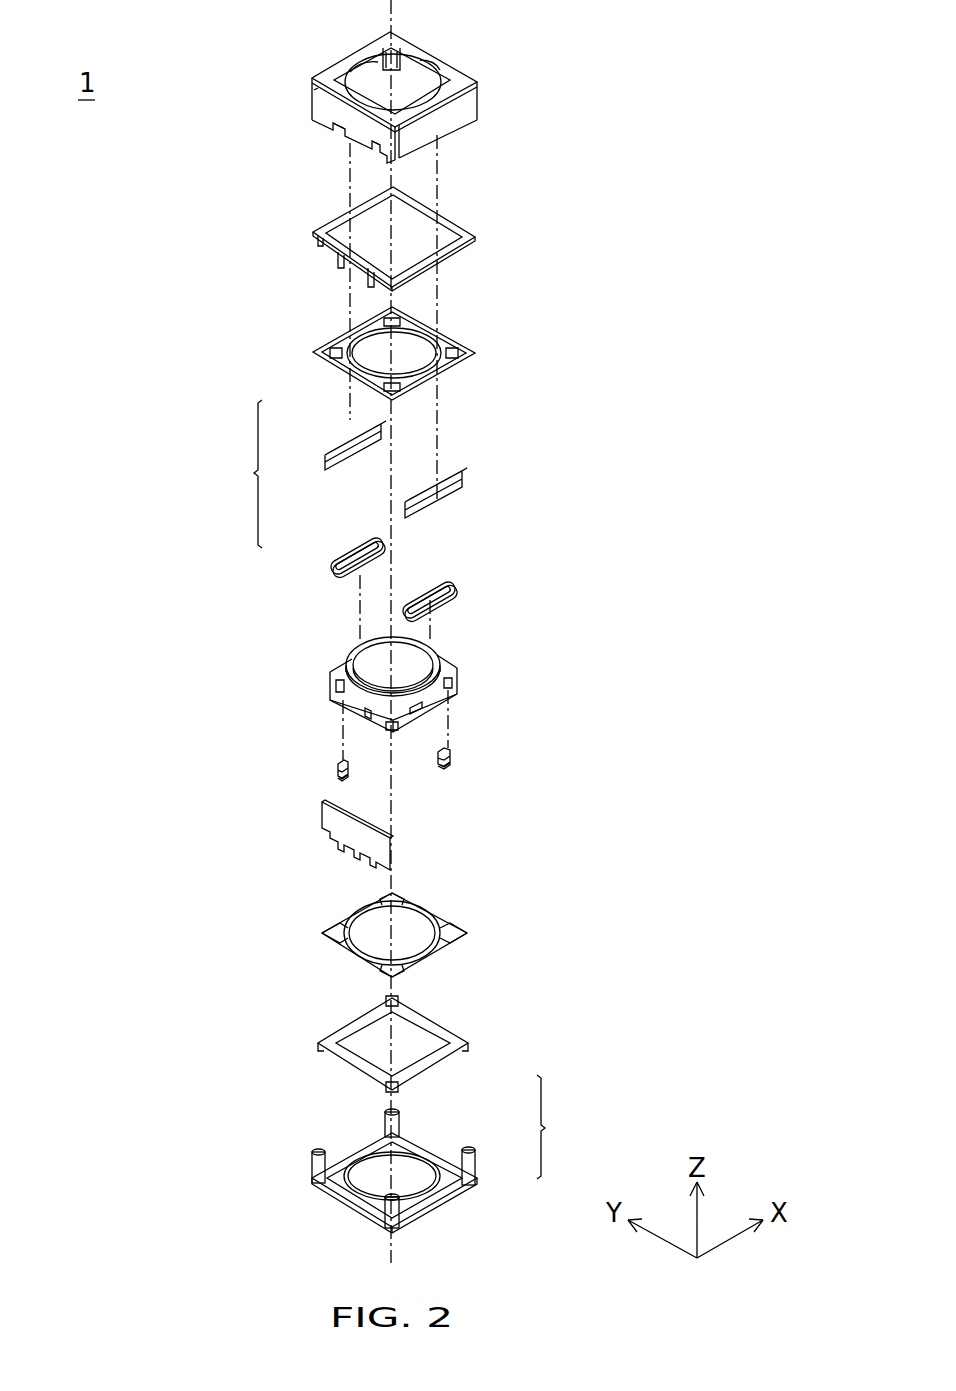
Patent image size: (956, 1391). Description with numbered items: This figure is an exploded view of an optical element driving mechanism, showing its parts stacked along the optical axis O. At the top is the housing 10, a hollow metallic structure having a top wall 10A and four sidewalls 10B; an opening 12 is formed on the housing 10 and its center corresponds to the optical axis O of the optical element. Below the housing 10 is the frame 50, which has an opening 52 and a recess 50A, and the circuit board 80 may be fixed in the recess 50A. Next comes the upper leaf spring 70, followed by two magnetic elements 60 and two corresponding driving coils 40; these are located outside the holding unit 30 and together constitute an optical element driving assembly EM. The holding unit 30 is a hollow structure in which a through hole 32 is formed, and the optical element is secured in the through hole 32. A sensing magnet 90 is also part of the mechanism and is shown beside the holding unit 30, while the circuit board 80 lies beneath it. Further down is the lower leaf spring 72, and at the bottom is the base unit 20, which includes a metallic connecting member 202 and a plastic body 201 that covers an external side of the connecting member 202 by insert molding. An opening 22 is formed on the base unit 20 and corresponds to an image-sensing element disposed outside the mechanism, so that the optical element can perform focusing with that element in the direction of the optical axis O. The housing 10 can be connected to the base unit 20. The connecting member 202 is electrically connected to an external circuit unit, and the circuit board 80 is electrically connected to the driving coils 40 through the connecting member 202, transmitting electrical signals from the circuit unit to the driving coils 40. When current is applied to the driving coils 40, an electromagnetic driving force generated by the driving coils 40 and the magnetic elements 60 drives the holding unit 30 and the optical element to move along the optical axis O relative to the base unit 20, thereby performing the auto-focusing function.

The optical axis O is at (399, 12).
The housing 10 is at (411, 99).
The top wall 10A is at (322, 92).
The sidewalls 10B is at (340, 62).
The opening 12 is at (437, 72).
The base unit 20 is at (427, 1154).
The body 201 is at (465, 1165).
The connecting member 202 is at (455, 1075).
The opening 22 is at (368, 1170).
The holding unit 30 is at (395, 679).
The through hole 32 is at (360, 680).
The driving coils 40 is at (338, 560).
The frame 50 is at (381, 239).
The recess 50A is at (335, 260).
The opening 52 is at (448, 237).
The magnetic elements 60 is at (340, 445).
The upper leaf spring 70 is at (437, 375).
The lower leaf spring 72 is at (455, 955).
The circuit board 80 is at (322, 815).
The sensing magnet 90 is at (338, 765).
The optical element driving assembly EM is at (229, 474).